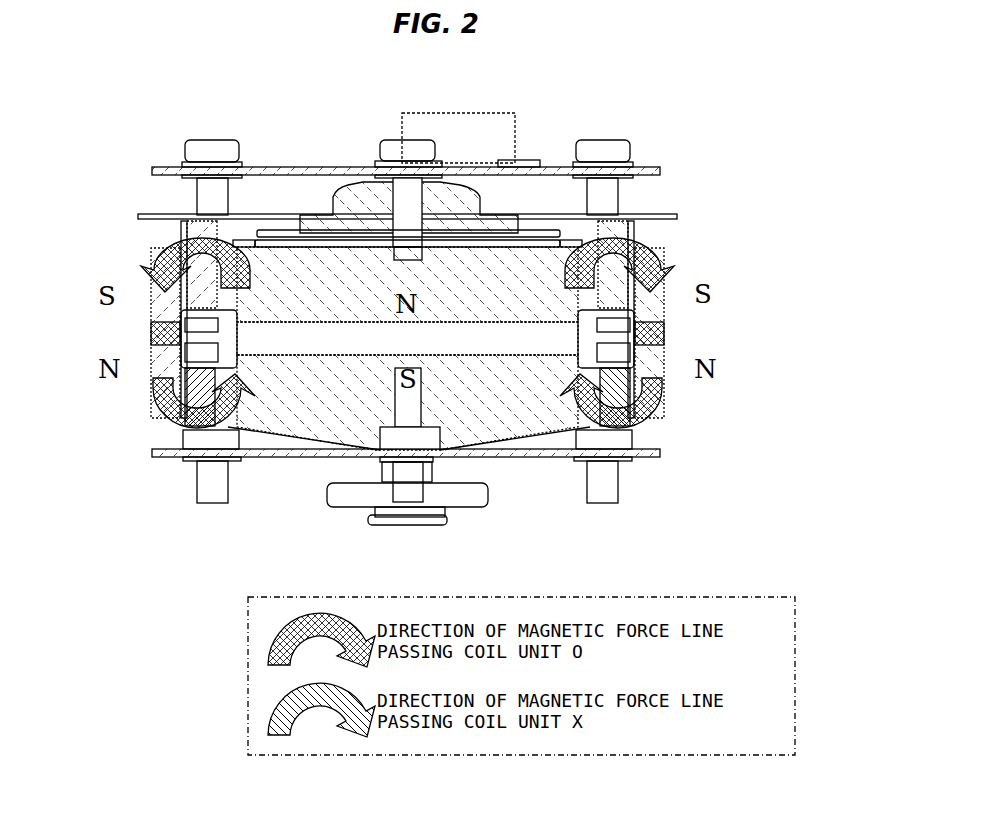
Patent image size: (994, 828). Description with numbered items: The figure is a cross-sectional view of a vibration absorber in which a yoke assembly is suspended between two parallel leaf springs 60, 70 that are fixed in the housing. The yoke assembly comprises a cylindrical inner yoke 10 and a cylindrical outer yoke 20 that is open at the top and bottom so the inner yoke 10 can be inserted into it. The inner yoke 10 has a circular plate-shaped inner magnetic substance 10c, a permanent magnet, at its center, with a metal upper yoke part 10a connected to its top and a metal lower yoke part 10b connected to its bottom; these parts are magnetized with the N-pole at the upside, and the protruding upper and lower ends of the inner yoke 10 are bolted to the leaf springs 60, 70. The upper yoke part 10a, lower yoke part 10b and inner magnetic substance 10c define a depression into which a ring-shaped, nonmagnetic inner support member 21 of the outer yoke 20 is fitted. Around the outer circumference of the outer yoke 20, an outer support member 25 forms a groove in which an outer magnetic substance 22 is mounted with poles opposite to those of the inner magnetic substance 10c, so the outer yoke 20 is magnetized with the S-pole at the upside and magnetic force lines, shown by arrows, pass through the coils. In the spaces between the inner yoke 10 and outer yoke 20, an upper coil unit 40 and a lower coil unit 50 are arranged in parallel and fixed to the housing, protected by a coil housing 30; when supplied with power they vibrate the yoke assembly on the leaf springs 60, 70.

The inner yoke 10 is at (582, 235).
The upper yoke part 10a is at (268, 263).
The lower yoke part 10b is at (277, 412).
The inner magnetic substance 10c is at (277, 340).
The outer yoke 20 is at (592, 355).
The inner support member 21 is at (630, 362).
The outer magnetic substance 22 is at (667, 327).
The outer support member 25 is at (638, 337).
The coil housing 30 is at (650, 215).
The upper coil unit 40 is at (642, 296).
The lower coil unit 50 is at (656, 418).
The leaf spring 60 is at (555, 167).
The leaf spring 70 is at (523, 459).